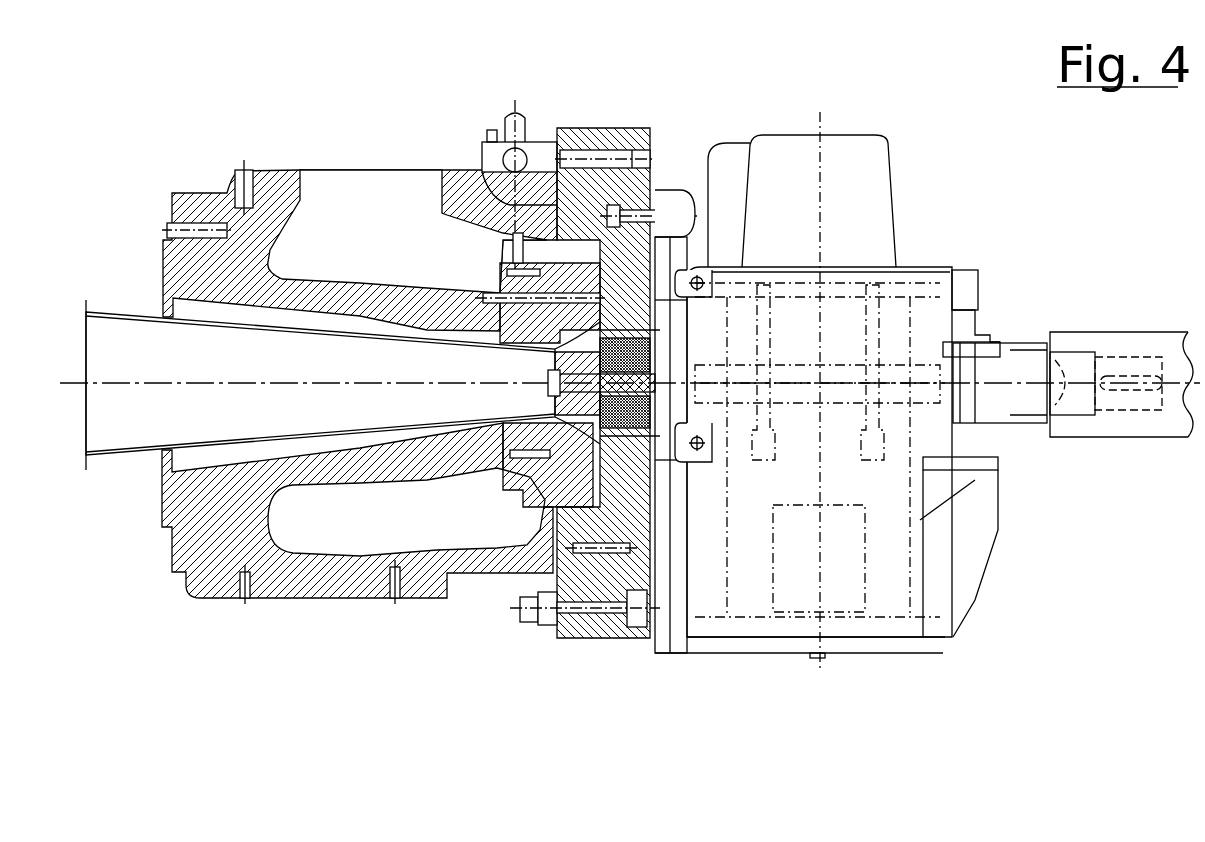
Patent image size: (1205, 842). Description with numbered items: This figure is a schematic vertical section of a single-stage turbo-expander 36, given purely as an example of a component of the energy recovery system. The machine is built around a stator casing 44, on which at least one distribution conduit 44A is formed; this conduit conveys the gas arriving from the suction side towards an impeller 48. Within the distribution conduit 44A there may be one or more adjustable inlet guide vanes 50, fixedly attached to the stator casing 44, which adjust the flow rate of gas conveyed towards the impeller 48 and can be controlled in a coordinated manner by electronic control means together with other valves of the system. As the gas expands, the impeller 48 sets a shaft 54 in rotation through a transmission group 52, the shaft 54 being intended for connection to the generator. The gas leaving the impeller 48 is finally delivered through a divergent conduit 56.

The turbo-expander 36 is at (709, 418).
The stator casing 44 is at (359, 329).
The distribution conduit 44A is at (398, 186).
The impeller 48 is at (600, 337).
The adjustable inlet guide vanes 50 is at (582, 268).
The transmission group 52 is at (873, 194).
The shaft 54 is at (1127, 342).
The divergent conduit 56 is at (132, 452).